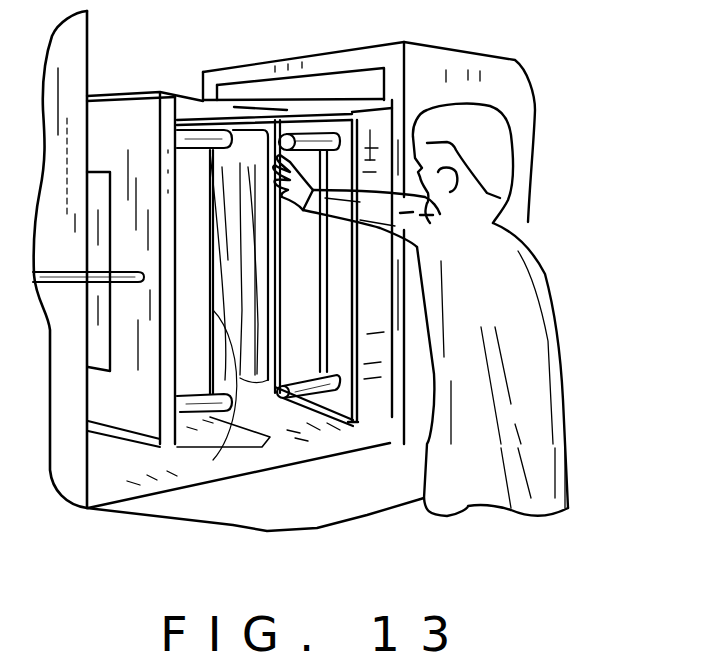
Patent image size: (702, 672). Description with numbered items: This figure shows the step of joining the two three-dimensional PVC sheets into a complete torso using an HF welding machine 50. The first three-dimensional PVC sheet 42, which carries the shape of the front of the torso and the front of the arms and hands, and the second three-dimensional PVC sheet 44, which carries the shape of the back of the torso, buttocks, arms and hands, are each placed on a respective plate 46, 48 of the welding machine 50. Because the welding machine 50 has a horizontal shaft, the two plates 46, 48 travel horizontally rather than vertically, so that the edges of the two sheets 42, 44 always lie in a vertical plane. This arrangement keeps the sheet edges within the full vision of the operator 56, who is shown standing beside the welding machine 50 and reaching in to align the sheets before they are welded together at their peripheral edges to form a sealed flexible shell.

The first three-dimensional PVC sheet 42 is at (230, 340).
The second three-dimensional PVC sheet 44 is at (213, 460).
The plate 46 is at (279, 331).
The plate 48 is at (213, 324).
The HF welding machine 50 is at (377, 133).
The operator 56 is at (540, 342).